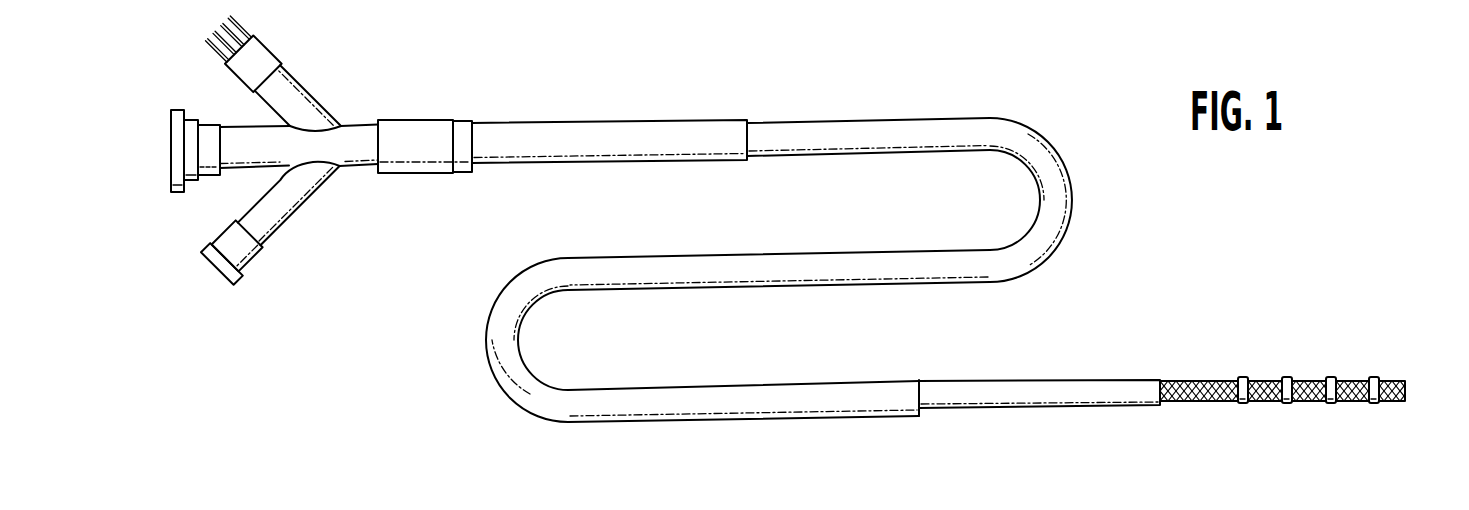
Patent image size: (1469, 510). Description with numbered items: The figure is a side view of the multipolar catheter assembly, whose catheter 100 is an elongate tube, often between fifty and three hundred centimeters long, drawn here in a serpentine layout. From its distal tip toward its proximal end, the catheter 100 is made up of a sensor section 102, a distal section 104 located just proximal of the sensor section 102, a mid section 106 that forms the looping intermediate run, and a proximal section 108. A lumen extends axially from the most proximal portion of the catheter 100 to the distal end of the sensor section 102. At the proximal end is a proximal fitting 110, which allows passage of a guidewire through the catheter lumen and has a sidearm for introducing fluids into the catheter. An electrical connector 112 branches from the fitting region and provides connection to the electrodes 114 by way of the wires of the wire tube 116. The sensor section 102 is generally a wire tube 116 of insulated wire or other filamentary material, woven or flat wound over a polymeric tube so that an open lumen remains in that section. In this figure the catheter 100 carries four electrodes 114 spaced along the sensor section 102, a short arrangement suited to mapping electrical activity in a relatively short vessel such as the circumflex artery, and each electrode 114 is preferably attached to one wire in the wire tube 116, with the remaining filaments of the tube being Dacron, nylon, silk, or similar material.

The catheter 100 is at (1018, 85).
The sensor section 102 is at (1405, 422).
The distal section 104 is at (1025, 397).
The mid section 106 is at (1048, 235).
The proximal section 108 is at (628, 132).
The proximal fitting 110 is at (357, 168).
The electrical connector 112 is at (283, 62).
The electrodes 114 is at (1287, 377).
The wire tube 116 is at (1190, 380).